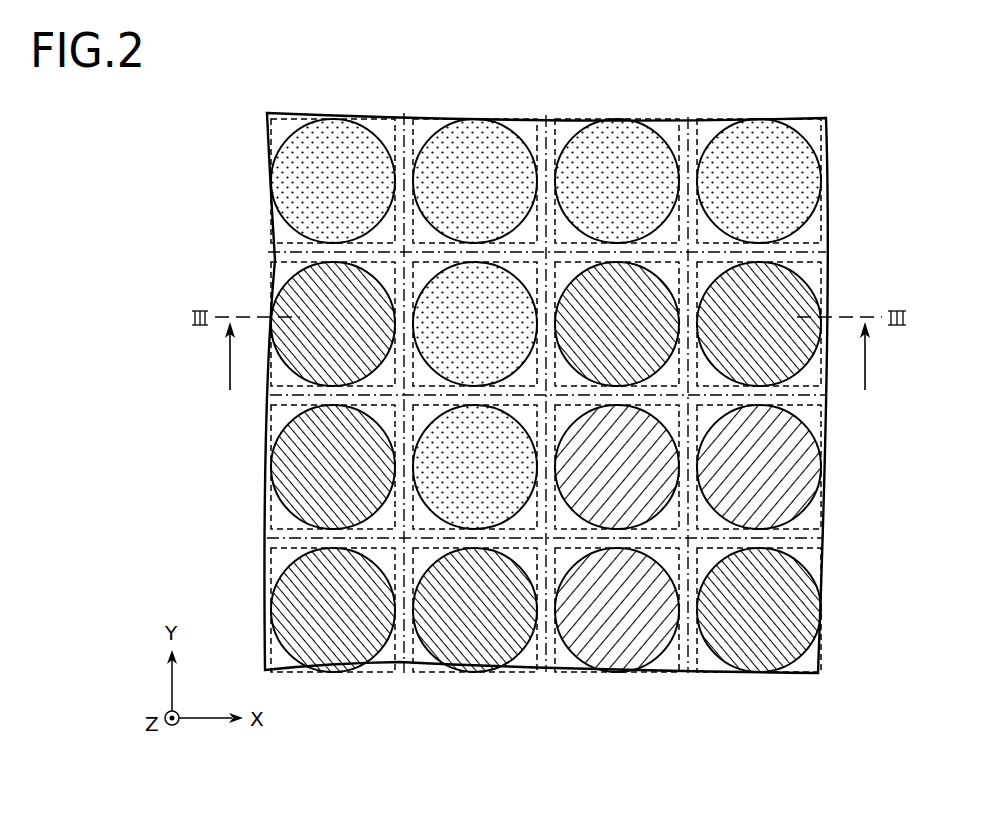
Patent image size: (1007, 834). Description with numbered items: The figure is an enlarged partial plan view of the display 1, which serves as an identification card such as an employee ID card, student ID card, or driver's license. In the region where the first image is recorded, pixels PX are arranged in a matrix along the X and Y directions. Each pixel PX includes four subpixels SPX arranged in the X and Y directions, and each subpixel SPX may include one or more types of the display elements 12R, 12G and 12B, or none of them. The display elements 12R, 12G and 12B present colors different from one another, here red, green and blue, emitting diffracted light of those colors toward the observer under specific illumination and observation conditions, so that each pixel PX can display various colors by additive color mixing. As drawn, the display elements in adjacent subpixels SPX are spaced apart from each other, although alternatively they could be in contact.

The display 1 is at (856, 101).
The pixel PX is at (548, 243).
The subpixel SPX is at (548, 548).
The display element 12B is at (443, 508).
The display element 12G is at (612, 270).
The display element 12R is at (638, 500).